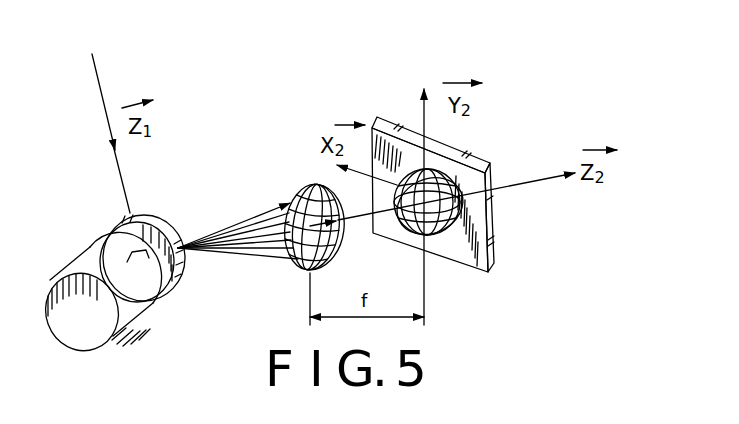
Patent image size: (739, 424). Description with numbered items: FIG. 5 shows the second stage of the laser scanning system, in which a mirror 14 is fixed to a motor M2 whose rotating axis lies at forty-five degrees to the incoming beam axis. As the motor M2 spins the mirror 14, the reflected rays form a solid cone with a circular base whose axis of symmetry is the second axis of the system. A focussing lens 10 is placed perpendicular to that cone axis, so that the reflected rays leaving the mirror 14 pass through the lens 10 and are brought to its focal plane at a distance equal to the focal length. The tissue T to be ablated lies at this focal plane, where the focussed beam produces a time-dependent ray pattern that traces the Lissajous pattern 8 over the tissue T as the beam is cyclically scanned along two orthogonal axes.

The mirror 14 is at (180, 280).
The focussing lens 10 is at (297, 183).
The Lissajous figures 8 is at (410, 228).
The motor M2 is at (131, 289).
The tissue T is at (498, 255).